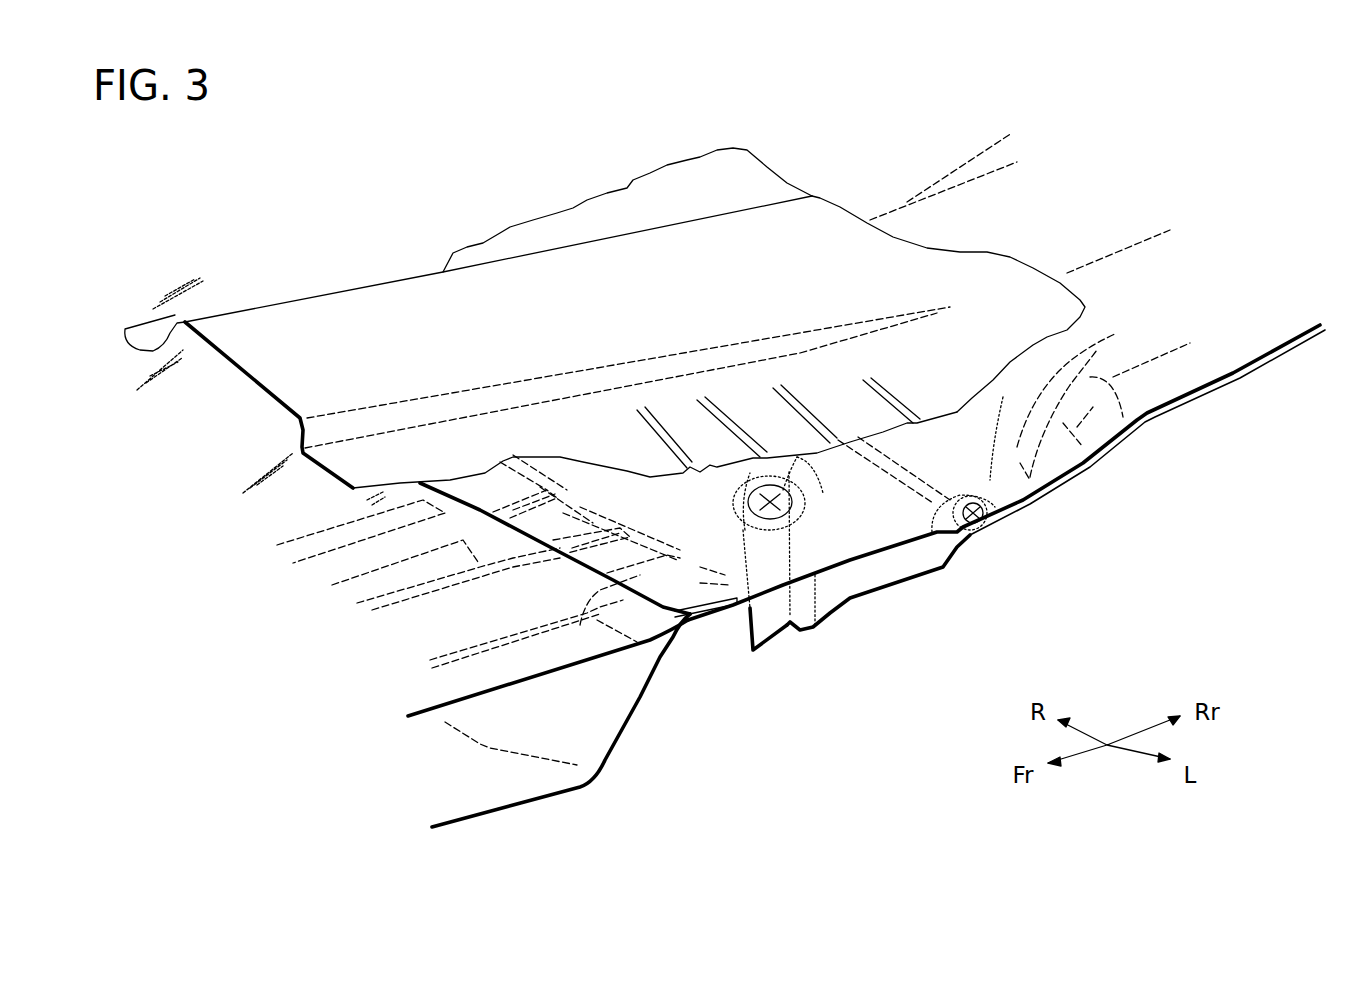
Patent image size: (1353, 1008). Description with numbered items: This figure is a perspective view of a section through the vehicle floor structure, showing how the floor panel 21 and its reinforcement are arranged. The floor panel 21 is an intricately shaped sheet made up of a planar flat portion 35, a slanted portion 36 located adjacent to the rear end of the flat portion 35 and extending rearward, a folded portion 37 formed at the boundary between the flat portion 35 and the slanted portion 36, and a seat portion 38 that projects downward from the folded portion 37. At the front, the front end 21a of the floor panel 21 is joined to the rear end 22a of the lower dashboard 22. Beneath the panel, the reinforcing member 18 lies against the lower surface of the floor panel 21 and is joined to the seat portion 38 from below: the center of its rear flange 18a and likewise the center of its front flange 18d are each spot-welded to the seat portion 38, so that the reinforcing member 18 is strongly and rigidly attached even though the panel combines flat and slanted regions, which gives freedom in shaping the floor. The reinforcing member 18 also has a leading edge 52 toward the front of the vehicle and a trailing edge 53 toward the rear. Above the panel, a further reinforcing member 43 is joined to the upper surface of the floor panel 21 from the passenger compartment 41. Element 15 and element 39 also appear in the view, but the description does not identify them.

The side sill 15 is at (540, 790).
The reinforcing member 18 is at (893, 588).
The rear flange 18a is at (990, 523).
The front flange 18d is at (777, 625).
The floor panel 21 is at (707, 488).
The front end 21a is at (565, 520).
The lower dashboard 22 is at (473, 607).
The rear end 22a is at (510, 533).
The flat portion 35 is at (797, 457).
The slanted portion 36 is at (997, 507).
The folded portion 37 is at (907, 463).
The seat portion 38 is at (980, 497).
The fastening portion with bolt 39 is at (737, 513).
The passenger compartment 41 is at (563, 176).
The reinforcing member 43 is at (382, 312).
The leading edge 52 is at (737, 615).
The trailing edge 53 is at (1000, 513).